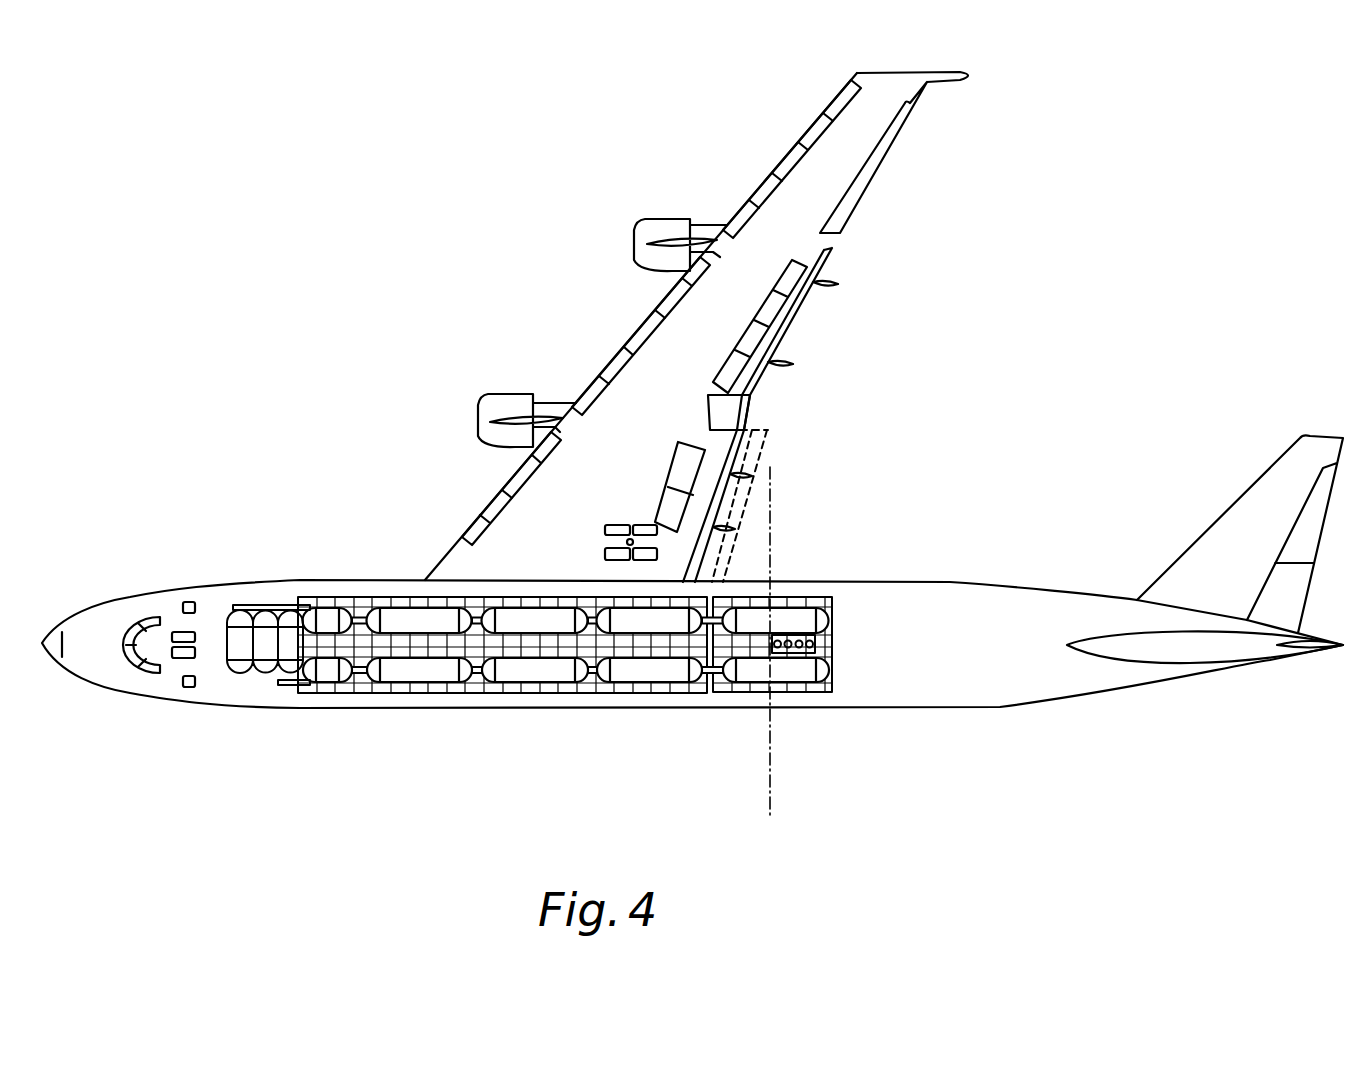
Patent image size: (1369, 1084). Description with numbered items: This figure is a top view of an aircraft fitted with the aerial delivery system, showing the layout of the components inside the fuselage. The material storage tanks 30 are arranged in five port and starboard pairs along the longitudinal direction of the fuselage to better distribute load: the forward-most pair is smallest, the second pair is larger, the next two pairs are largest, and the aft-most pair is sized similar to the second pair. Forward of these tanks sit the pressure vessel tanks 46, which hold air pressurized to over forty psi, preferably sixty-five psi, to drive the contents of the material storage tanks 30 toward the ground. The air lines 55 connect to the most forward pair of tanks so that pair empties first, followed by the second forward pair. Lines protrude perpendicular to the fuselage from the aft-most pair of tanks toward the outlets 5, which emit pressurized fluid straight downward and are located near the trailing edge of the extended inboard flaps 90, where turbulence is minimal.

The material storage tanks 30 is at (337, 600).
The air lines 55 is at (253, 605).
The pressure vessel tanks 46 is at (260, 673).
The outlets 5 is at (815, 642).
The inboard flaps 90 is at (767, 445).